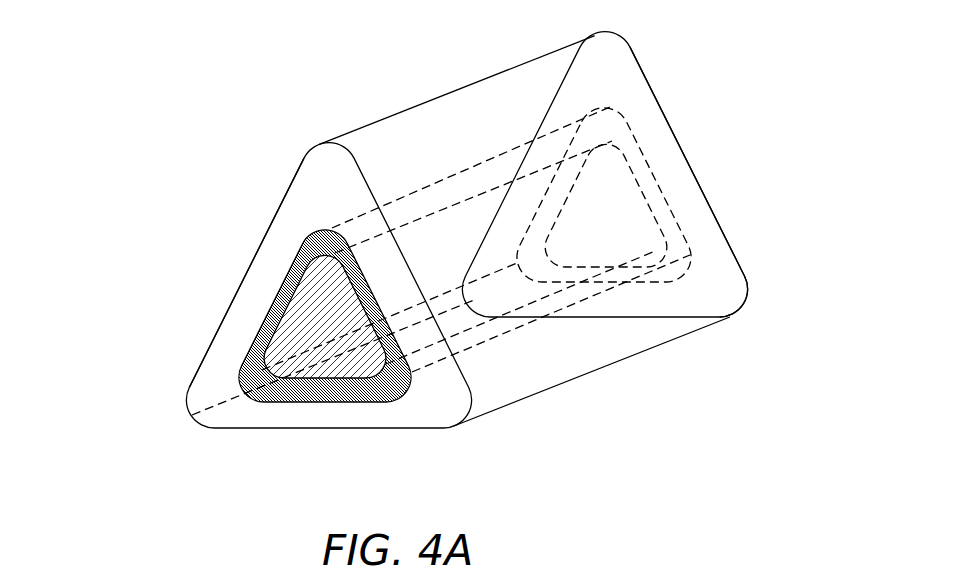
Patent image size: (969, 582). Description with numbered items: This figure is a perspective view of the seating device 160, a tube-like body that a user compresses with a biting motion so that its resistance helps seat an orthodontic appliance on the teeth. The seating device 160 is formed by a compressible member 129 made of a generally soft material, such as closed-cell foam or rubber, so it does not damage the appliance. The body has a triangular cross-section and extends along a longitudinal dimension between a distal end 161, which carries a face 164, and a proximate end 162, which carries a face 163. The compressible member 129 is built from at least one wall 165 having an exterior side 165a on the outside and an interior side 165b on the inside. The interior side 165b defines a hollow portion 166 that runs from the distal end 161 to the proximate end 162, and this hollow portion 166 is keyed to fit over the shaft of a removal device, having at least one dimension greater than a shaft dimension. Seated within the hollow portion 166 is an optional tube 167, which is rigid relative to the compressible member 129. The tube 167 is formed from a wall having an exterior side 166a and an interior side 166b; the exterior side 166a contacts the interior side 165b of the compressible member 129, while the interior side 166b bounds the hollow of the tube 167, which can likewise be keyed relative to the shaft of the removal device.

The seating device 160 is at (277, 113).
The compressible member 129 is at (303, 213).
The wall 165 is at (477, 82).
The proximate end 162 is at (733, 150).
The face 163 is at (665, 115).
The face 164 is at (236, 280).
The distal end 161 is at (157, 343).
The exterior side 165a is at (703, 217).
The interior side 165b is at (662, 208).
The tube 167 is at (335, 401).
The exterior side 166a is at (252, 341).
The interior side 166b is at (380, 334).
The hollow portion 166 is at (277, 362).